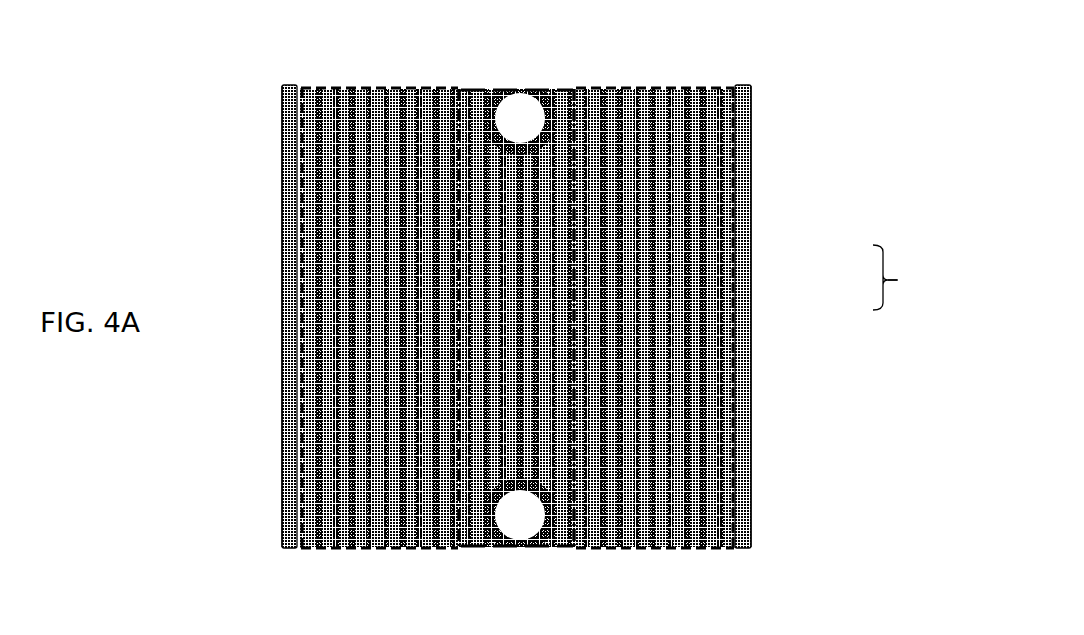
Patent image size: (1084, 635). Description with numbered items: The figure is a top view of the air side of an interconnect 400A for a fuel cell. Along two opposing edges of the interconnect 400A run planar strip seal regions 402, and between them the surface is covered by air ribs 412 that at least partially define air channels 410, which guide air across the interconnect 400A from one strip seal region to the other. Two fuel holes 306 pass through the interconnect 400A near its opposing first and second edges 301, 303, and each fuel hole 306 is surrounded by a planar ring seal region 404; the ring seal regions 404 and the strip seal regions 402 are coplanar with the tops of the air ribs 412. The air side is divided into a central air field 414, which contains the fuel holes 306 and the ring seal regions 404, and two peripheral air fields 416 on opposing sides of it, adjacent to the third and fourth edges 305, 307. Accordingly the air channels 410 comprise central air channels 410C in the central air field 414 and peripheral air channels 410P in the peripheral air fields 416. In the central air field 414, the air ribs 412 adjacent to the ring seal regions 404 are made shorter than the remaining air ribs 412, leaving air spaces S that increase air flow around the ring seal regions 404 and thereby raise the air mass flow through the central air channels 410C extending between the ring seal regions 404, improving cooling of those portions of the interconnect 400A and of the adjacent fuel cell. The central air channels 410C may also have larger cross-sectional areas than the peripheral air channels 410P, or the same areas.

The interconnect 400A is at (233, 83).
The air spaces S is at (649, 309).
The fuel holes 306 is at (514, 103).
The ring seal regions 404 is at (545, 88).
The first edge 301 is at (676, 87).
The second edge 303 is at (668, 549).
The strip seal regions 402 is at (283, 188).
The air ribs 412 is at (540, 253).
The air channels 410 is at (908, 277).
The central air channels 410C is at (531, 308).
The peripheral air channels 410P is at (673, 319).
The third edge 305 is at (753, 318).
The fourth edge 307 is at (278, 320).
The peripheral air fields 416 is at (300, 303).
The central air field 414 is at (575, 322).